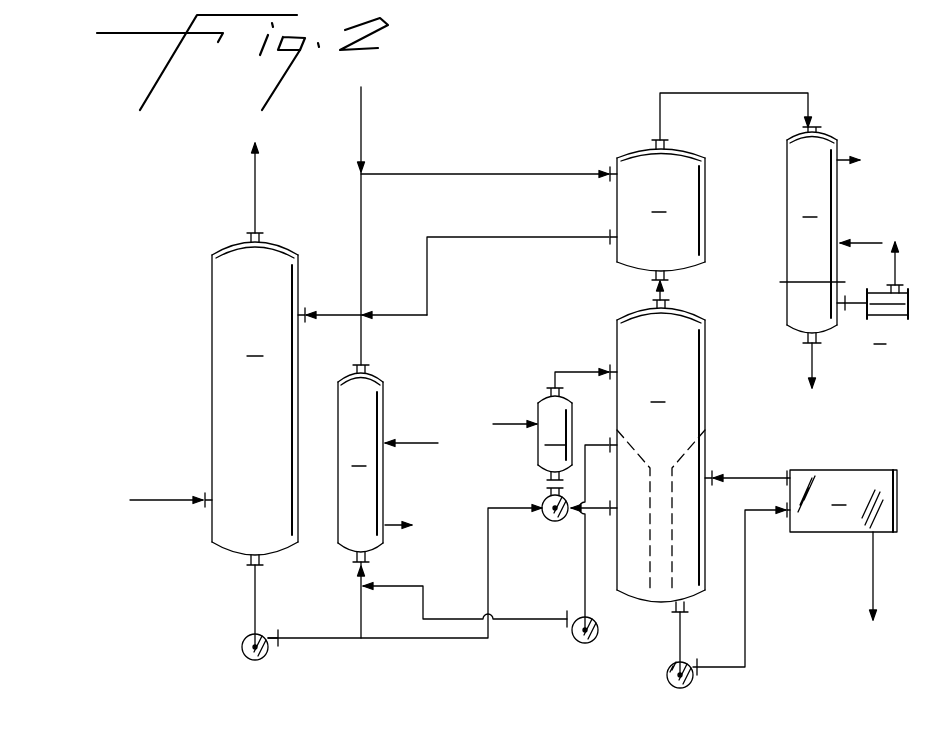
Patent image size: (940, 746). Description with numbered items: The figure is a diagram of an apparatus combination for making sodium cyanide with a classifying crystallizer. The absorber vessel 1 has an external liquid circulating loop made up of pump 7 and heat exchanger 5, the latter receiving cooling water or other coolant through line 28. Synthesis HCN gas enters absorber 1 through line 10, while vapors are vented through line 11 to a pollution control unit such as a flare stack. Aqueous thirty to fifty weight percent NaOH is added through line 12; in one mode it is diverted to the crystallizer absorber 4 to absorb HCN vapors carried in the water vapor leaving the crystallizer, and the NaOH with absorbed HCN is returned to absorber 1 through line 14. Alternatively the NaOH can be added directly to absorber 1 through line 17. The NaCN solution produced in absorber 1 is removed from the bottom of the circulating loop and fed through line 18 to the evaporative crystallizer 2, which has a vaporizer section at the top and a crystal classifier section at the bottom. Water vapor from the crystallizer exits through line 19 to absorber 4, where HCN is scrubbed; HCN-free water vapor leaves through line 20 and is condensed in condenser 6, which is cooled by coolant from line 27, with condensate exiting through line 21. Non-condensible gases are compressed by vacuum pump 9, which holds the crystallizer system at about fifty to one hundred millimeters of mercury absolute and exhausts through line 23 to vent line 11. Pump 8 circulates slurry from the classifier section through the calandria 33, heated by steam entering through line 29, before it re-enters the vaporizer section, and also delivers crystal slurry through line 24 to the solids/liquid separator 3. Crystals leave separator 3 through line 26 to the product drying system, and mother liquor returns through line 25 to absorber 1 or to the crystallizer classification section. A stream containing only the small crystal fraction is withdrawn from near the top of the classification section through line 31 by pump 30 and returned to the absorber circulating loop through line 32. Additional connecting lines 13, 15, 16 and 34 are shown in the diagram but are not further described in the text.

The absorber vessel 1 is at (255, 399).
The evaporative crystallizer 2 is at (661, 456).
The solids/liquid separator 3 is at (842, 501).
The crystallizer absorber 4 is at (657, 210).
The heat exchanger 5 is at (360, 463).
The condenser 6 is at (812, 235).
The pump 7 is at (247, 650).
The pump 8 is at (552, 522).
The vacuum pump 9 is at (887, 314).
The line 10 is at (172, 498).
The line 11 is at (255, 207).
The line 12 is at (364, 132).
The line to vessel 4 13 is at (522, 173).
The line 14 is at (510, 237).
The bottom outlet line 15 is at (262, 604).
The line to heat exchanger 16 is at (357, 592).
The line 17 is at (340, 314).
The line 18 is at (486, 578).
The line 19 is at (668, 284).
The line 20 is at (757, 93).
The line 21 is at (805, 367).
The line 23 is at (900, 272).
The line 24 is at (748, 622).
The line 25 is at (764, 477).
The line 26 is at (870, 582).
The line 27 is at (868, 242).
The line 28 is at (423, 442).
The line 29 is at (516, 423).
The pump 30 is at (589, 642).
The line 31 is at (583, 588).
The line 32 is at (453, 618).
The calandria 33 is at (555, 434).
The line from vessel 33 to separator 34 is at (588, 370).